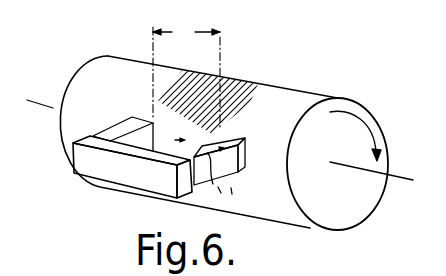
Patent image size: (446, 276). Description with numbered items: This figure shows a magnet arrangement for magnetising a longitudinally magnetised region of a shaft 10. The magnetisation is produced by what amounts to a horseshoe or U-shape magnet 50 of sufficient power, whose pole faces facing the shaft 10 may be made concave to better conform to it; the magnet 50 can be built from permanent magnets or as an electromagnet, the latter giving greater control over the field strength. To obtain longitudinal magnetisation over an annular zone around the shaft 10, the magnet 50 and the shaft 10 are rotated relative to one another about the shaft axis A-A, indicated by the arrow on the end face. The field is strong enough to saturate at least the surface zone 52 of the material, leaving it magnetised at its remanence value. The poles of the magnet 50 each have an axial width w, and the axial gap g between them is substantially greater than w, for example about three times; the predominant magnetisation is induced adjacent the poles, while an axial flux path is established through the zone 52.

The shaft 10 is at (78, 73).
The magnet 50 is at (78, 170).
The surface zone 52 is at (230, 72).